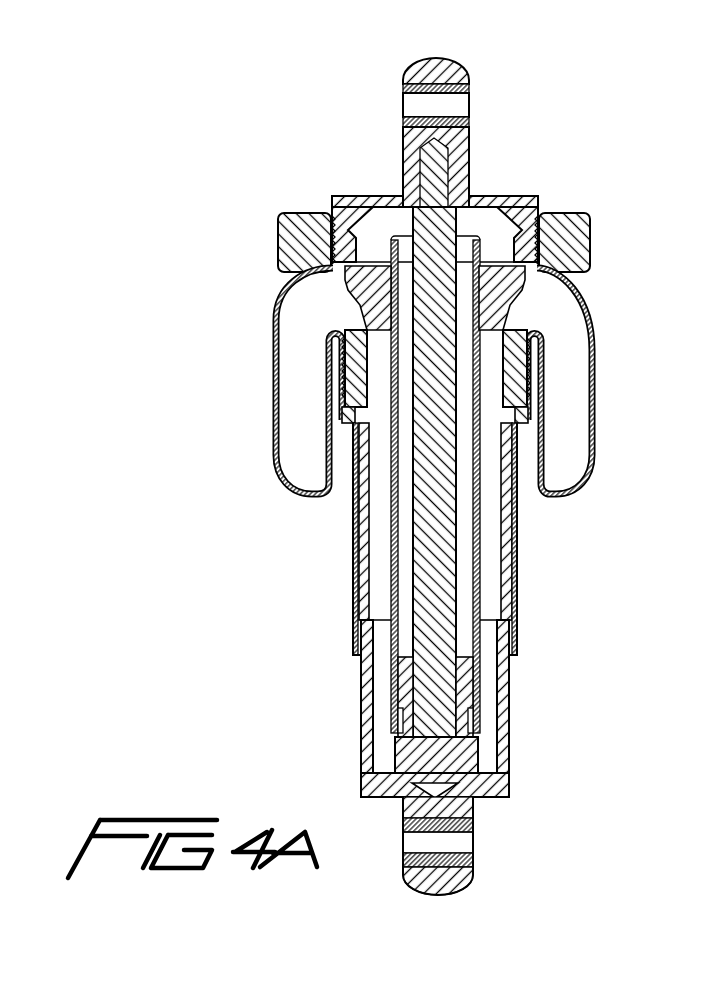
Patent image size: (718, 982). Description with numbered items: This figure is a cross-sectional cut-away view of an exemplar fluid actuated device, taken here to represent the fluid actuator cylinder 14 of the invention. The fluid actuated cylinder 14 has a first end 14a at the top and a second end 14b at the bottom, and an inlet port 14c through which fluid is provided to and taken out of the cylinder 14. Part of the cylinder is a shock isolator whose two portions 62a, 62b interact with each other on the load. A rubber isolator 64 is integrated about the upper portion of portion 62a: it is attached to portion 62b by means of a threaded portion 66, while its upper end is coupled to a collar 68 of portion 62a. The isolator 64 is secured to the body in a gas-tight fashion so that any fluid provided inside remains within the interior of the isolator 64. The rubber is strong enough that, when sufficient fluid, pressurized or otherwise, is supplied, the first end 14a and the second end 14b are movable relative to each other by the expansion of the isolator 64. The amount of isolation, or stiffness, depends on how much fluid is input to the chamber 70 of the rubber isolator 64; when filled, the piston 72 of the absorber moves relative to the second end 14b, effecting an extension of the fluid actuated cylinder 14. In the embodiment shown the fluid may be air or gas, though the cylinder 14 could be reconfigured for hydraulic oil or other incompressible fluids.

The fluid actuator cylinder 14 is at (452, 476).
The first end 14a is at (470, 140).
The second end 14b is at (478, 808).
The inlet port 14c is at (350, 204).
The portion of shock isolator 62a is at (538, 196).
The portion of shock isolator 62b is at (352, 540).
The rubber isolator 64 is at (596, 350).
The threaded portion 66 is at (526, 388).
The collar 68 is at (590, 245).
The chamber 70 is at (308, 322).
The piston 72 is at (455, 578).